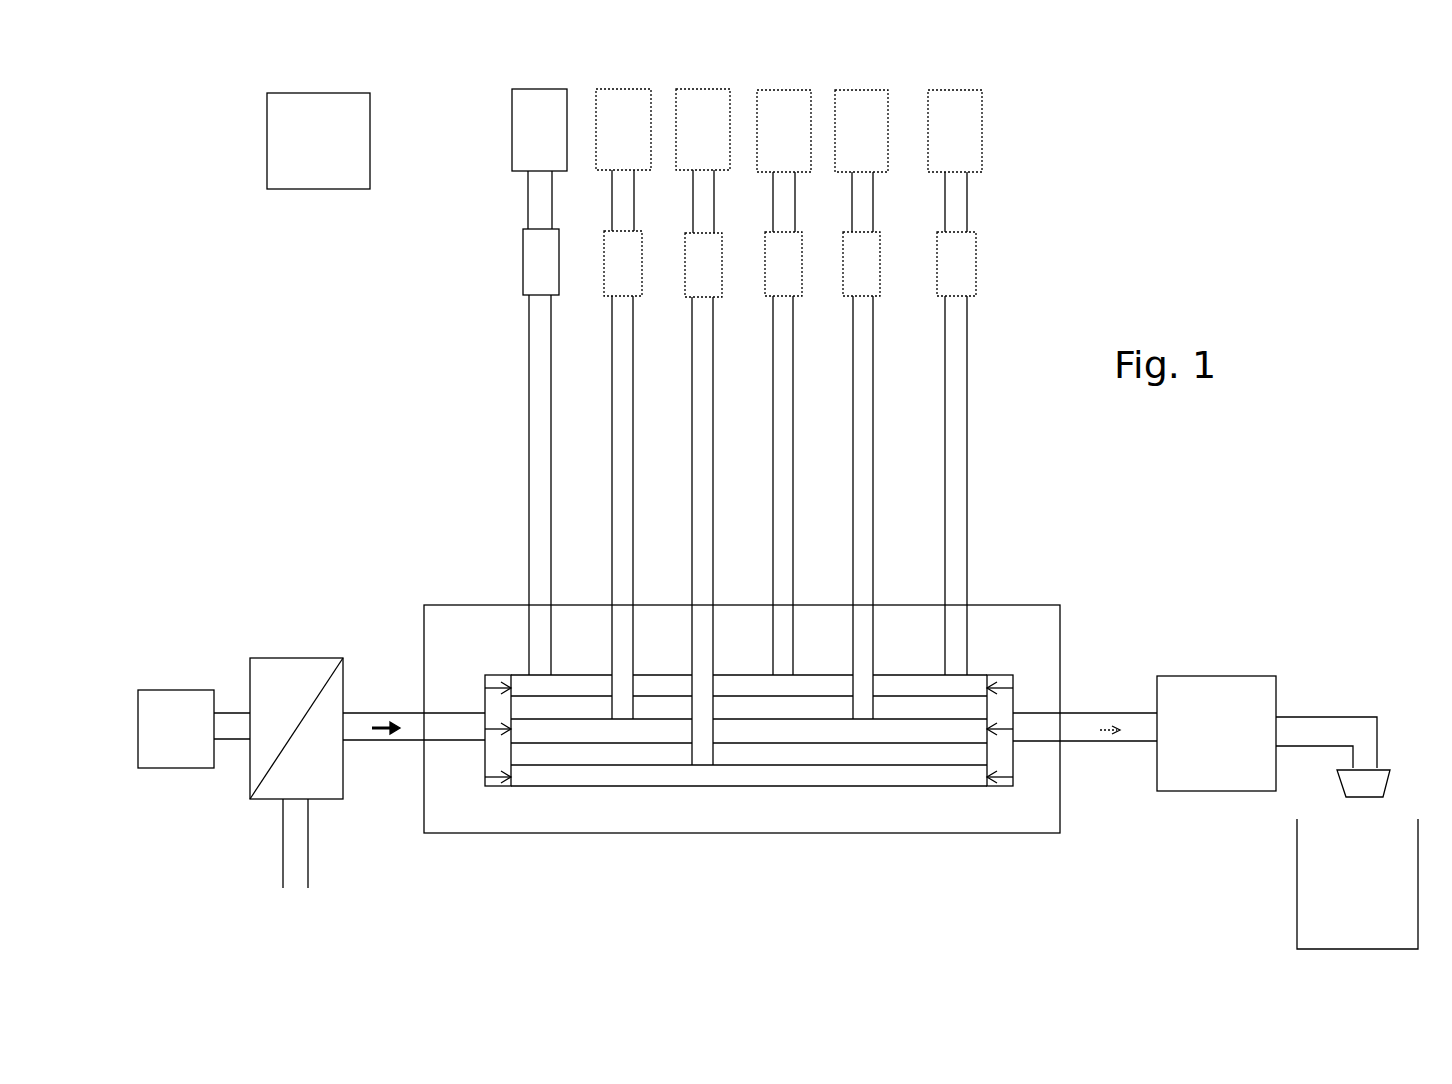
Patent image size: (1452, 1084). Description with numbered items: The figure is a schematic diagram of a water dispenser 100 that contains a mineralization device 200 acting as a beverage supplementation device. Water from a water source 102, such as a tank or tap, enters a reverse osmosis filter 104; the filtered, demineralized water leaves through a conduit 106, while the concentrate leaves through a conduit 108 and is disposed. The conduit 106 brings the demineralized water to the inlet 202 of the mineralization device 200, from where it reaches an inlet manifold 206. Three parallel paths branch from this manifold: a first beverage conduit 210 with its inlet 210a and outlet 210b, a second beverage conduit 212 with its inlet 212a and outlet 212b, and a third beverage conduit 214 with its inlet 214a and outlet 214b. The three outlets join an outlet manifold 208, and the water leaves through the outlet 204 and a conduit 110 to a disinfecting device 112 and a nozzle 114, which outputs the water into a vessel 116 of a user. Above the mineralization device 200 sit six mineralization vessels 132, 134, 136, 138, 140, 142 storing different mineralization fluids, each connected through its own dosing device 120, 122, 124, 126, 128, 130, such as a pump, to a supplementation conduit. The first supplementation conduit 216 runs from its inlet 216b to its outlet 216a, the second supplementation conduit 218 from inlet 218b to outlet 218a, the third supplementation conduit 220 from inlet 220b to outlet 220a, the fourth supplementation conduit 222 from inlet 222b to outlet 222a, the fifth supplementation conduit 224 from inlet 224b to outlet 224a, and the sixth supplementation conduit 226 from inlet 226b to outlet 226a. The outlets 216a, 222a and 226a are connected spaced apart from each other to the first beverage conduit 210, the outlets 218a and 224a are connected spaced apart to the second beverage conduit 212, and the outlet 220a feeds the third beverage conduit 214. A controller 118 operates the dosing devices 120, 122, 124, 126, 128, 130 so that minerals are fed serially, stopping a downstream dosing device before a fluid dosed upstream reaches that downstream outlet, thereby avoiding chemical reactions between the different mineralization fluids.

The water dispenser 100 is at (1028, 221).
The water source 102 is at (183, 690).
The reverse osmosis filter 104 is at (298, 658).
The conduit 106 is at (378, 713).
The conduit 108 is at (291, 845).
The conduit 110 is at (1075, 742).
The disinfecting device 112 is at (1215, 791).
The nozzle 114 is at (1375, 782).
The vessel 116 is at (1302, 893).
The controller 118 is at (318, 189).
The first dosing device 120 is at (525, 281).
The second dosing device 122 is at (610, 282).
The third dosing device 124 is at (695, 285).
The fourth dosing device 126 is at (768, 285).
The fifth dosing device 128 is at (847, 285).
The sixth dosing device 130 is at (945, 283).
The first mineralization vessel 132 is at (540, 89).
The second mineralization vessel 134 is at (627, 89).
The third mineralization vessel 136 is at (708, 89).
The fourth mineralization vessel 138 is at (785, 90).
The fifth mineralization vessel 140 is at (853, 90).
The sixth mineralization vessel 142 is at (957, 90).
The mineralization device 200 is at (1075, 582).
The inlet 202 is at (420, 728).
The outlet 204 is at (1015, 726).
The inlet manifold 206 is at (500, 786).
The outlet manifold 208 is at (1002, 786).
The first beverage conduit 210 is at (578, 688).
The inlet of the first beverage conduit 210a is at (485, 688).
The outlet of the first beverage conduit 210b is at (1013, 688).
The second beverage conduit 212 is at (540, 738).
The inlet of the second beverage conduit 212a is at (485, 729).
The outlet of the second beverage conduit 212b is at (1013, 729).
The third beverage conduit 214 is at (755, 786).
The inlet of the third beverage conduit 214a is at (485, 777).
The outlet of the third beverage conduit 214b is at (1013, 777).
The first supplementation conduit 216 is at (537, 620).
The outlet of the first supplementation conduit 216a is at (546, 661).
The inlet of the first supplementation conduit 216b is at (540, 602).
The second supplementation conduit 218 is at (620, 628).
The outlet of the second supplementation conduit 218a is at (616, 732).
The inlet of the second supplementation conduit 218b is at (622, 602).
The third supplementation conduit 220 is at (702, 654).
The outlet of the third supplementation conduit 220a is at (697, 778).
The inlet of the third supplementation conduit 220b is at (703, 602).
The fourth supplementation conduit 222 is at (783, 655).
The outlet of the fourth supplementation conduit 222a is at (777, 688).
The inlet of the fourth supplementation conduit 222b is at (783, 602).
The fifth supplementation conduit 224 is at (865, 645).
The outlet of the fifth supplementation conduit 224a is at (856, 732).
The inlet of the fifth supplementation conduit 224b is at (862, 602).
The sixth supplementation conduit 226 is at (952, 635).
The outlet of the sixth supplementation conduit 226a is at (956, 668).
The inlet of the sixth supplementation conduit 226b is at (950, 595).